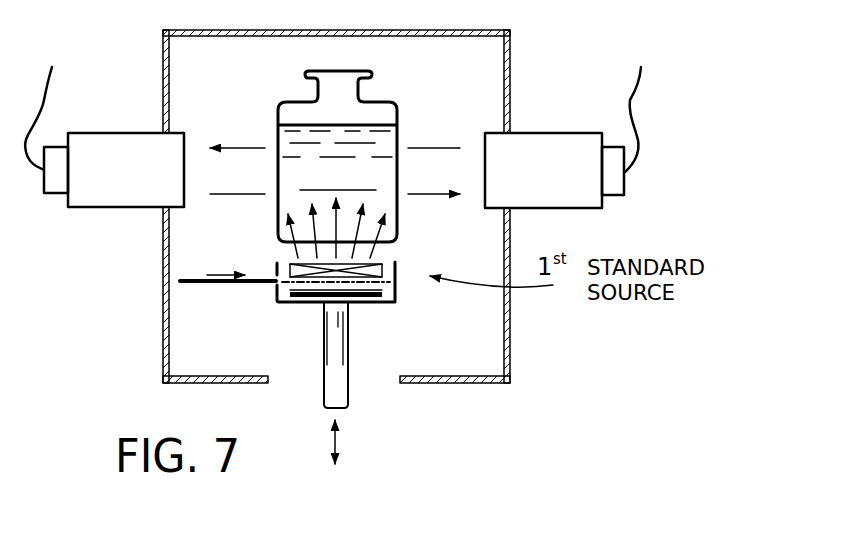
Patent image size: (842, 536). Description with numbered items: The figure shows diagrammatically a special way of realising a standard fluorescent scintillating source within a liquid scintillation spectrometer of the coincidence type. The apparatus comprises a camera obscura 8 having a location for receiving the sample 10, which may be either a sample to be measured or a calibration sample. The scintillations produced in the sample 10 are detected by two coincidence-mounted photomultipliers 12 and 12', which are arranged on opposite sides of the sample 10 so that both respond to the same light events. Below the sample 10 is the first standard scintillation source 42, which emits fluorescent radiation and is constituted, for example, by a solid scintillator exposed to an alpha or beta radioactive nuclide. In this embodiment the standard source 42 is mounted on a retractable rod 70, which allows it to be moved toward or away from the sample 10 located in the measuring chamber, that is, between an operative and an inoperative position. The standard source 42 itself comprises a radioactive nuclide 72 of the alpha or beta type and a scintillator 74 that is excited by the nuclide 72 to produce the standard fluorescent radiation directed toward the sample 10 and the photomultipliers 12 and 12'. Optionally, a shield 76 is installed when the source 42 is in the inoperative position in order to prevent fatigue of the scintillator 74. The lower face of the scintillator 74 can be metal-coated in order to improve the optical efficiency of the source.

The camera obscura 8 is at (203, 32).
The sample 10 is at (388, 135).
The photomultiplier 12 is at (145, 137).
The photomultiplier 12' is at (524, 137).
The first standard scintillation source 42 is at (366, 318).
The retractable rod 70 is at (343, 392).
The radioactive nuclide 72 is at (370, 298).
The scintillator 74 is at (378, 264).
The shield 76 is at (296, 285).